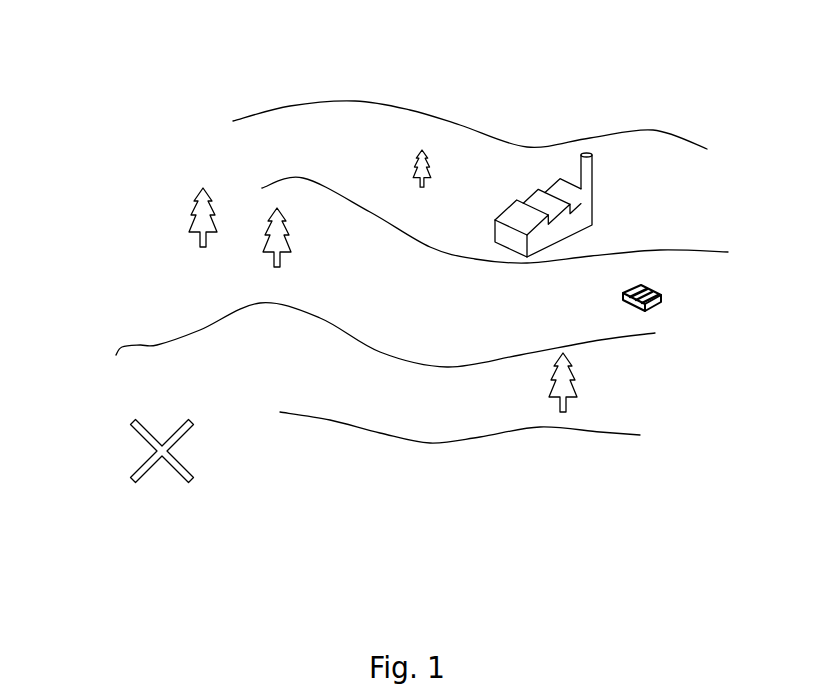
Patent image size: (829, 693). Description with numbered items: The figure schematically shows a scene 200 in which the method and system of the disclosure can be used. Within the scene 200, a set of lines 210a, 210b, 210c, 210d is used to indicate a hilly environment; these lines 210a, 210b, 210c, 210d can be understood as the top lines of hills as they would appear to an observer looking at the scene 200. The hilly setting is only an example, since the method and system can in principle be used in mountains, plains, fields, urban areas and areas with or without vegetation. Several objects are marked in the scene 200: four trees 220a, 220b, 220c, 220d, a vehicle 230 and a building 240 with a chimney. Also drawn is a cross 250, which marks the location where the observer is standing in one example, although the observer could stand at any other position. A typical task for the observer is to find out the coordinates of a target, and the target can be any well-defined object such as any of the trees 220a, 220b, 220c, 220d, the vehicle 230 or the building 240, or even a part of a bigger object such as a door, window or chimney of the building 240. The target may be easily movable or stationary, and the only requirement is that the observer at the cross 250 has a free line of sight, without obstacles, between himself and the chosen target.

The scene 200 is at (196, 58).
The line 210a is at (350, 102).
The line 210b is at (697, 252).
The line 210c is at (412, 362).
The line 210d is at (604, 435).
The tree 220a is at (197, 197).
The tree 220b is at (287, 213).
The tree 220c is at (423, 151).
The tree 220d is at (578, 363).
The vehicle 230 is at (662, 298).
The building 240 is at (592, 183).
The cross 250 is at (135, 470).